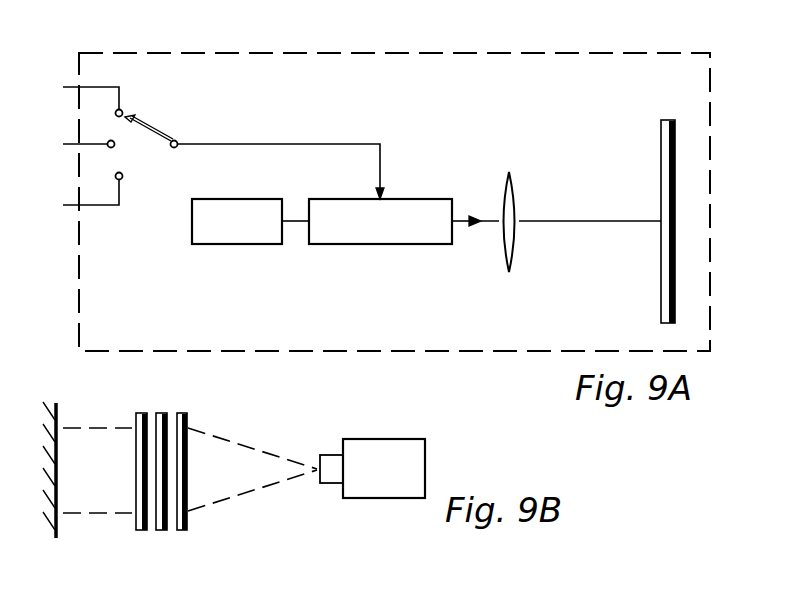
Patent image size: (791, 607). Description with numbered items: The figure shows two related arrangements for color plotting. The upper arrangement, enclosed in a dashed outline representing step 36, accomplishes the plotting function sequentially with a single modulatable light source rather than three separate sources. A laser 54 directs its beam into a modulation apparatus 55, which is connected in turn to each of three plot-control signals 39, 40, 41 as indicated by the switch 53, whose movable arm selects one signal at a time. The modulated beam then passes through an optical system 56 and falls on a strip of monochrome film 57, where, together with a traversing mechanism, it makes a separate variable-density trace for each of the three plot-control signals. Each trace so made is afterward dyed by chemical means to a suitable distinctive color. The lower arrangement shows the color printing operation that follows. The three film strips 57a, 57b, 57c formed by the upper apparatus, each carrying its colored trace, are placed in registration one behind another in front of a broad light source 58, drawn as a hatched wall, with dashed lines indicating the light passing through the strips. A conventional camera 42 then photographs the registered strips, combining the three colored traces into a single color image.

In FIG. 9A, the step 36 is at (608, 53).
In FIG. 9A, the plot-control signal 39 is at (77, 93).
In FIG. 9A, the plot-control signal 40 is at (75, 144).
In FIG. 9A, the plot-control signal 41 is at (79, 194).
In FIG. 9A, the switch 53 is at (157, 124).
In FIG. 9A, the laser 54 is at (238, 246).
In FIG. 9A, the modulation apparatus 55 is at (380, 246).
In FIG. 9A, the optical system 56 is at (505, 266).
In FIG. 9A, the strip of monochrome film 57 is at (661, 172).
In FIG. 9B, the film strip 57a is at (140, 532).
In FIG. 9B, the film strip 57b is at (159, 532).
In FIG. 9B, the film strip 57c is at (184, 532).
In FIG. 9B, the broad light source 58 is at (60, 530).
In FIG. 9B, the camera 42 is at (375, 439).